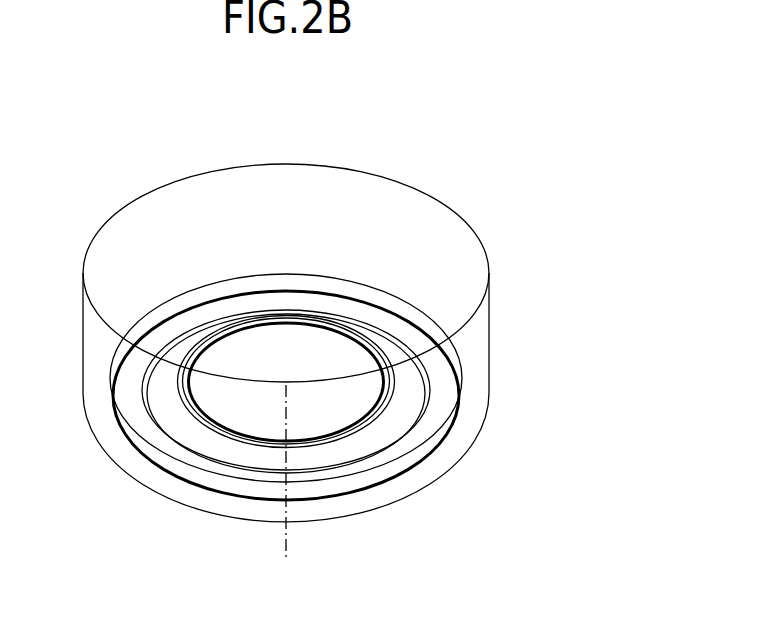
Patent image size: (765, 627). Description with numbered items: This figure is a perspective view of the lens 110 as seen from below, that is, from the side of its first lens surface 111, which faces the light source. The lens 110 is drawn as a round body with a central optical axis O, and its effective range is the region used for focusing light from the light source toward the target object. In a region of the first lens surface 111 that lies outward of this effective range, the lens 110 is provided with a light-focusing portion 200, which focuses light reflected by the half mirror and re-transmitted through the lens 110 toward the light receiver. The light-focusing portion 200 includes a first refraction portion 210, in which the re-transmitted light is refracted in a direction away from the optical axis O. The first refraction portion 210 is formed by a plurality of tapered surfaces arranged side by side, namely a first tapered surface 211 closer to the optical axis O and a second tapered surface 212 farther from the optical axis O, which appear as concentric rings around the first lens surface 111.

The lens 110 is at (443, 183).
The first lens surface 111 is at (229, 412).
The light-focusing portion 200 is at (364, 428).
The first refraction portion 210 is at (364, 412).
The first tapered surface 211 is at (383, 440).
The second tapered surface 212 is at (436, 432).
The optical axis O is at (287, 543).